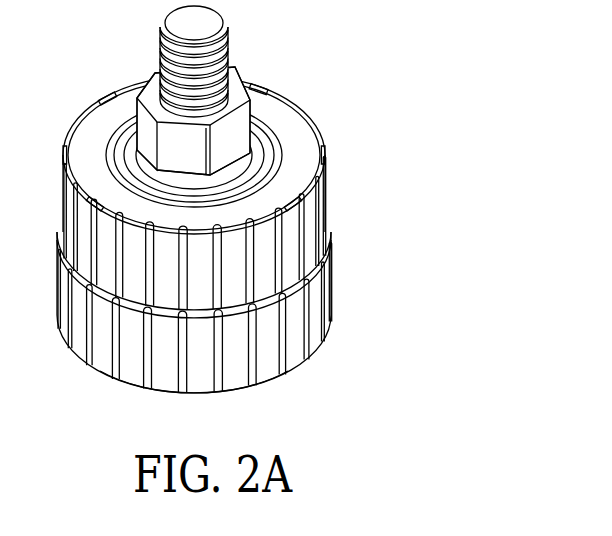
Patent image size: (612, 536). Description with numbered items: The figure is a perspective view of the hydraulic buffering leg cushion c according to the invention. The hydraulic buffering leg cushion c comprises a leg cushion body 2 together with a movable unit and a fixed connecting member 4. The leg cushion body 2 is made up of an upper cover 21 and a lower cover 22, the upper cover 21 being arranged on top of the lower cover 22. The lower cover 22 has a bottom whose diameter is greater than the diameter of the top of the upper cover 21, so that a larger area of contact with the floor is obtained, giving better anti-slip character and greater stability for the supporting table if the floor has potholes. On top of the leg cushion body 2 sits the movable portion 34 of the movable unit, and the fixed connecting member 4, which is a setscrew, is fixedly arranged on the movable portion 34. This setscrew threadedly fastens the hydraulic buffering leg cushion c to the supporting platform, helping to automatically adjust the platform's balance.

The leg cushion body 2 is at (238, 234).
The upper cover 21 is at (307, 207).
The lower cover 22 is at (219, 312).
The movable portion 34 is at (237, 133).
The fixed connecting member 4 is at (228, 42).
The hydraulic buffering leg cushion c is at (442, 53).